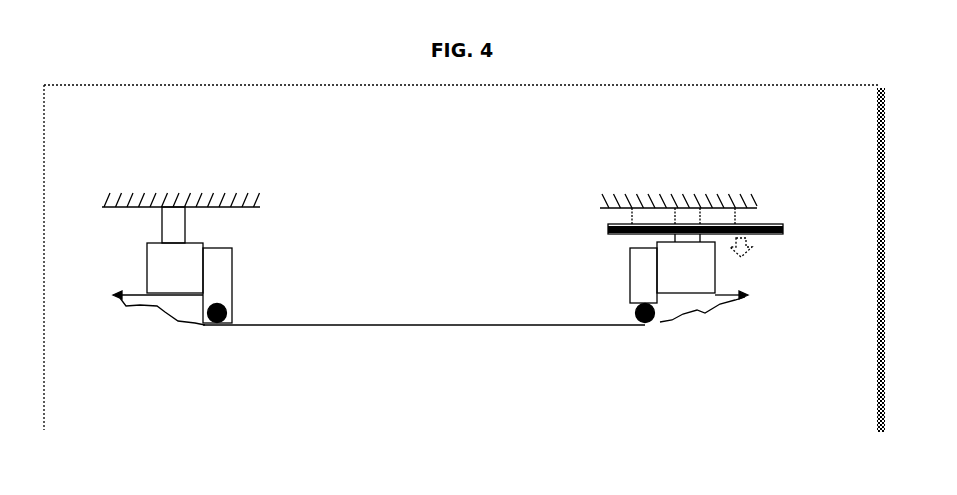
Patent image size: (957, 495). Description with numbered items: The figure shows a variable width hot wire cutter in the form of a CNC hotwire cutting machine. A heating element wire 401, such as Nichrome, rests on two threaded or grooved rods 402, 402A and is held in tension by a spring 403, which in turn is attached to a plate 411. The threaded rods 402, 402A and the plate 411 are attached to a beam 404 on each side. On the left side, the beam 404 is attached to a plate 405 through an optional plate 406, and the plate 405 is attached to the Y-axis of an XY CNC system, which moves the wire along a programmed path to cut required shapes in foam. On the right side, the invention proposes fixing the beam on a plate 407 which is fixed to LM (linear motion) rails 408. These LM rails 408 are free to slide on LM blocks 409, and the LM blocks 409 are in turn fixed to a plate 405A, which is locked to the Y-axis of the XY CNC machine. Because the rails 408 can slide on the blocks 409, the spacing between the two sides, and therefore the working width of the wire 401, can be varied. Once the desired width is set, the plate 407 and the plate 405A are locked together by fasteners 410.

The heating element wire 401 is at (450, 327).
The threaded rod 402 is at (208, 327).
The threaded rod 402A is at (637, 330).
The spring 403 is at (155, 308).
The beam 404 is at (147, 265).
The plate 405 is at (243, 210).
The plate 405A is at (607, 210).
The optional plate 406 is at (157, 215).
The plate 407 is at (765, 237).
The LM rails 408 is at (765, 217).
The LM blocks 409 is at (662, 212).
The fasteners 410 is at (747, 257).
The plate 411 is at (722, 307).